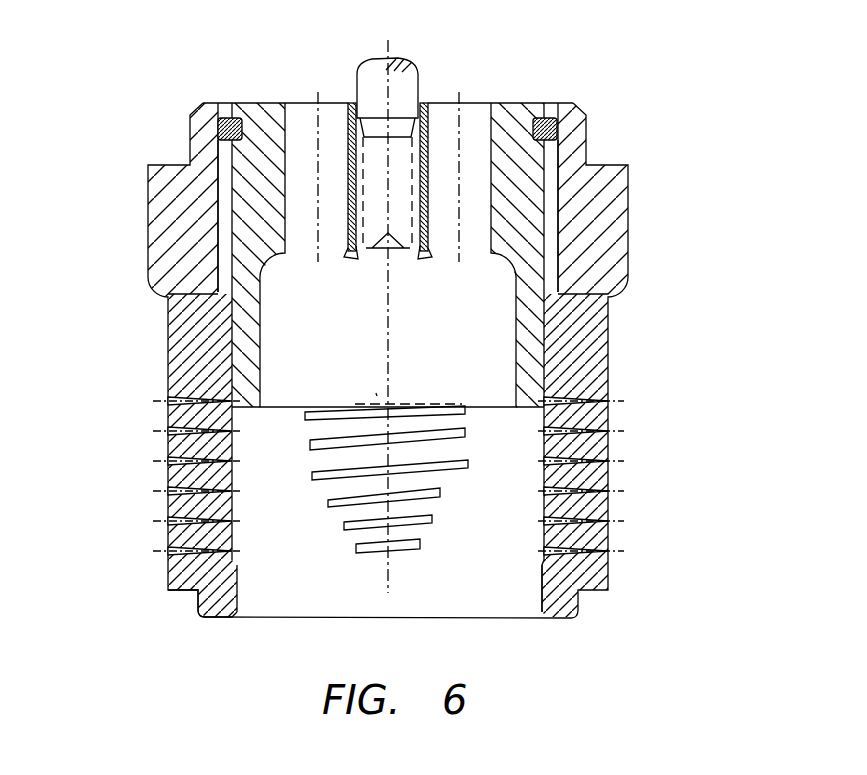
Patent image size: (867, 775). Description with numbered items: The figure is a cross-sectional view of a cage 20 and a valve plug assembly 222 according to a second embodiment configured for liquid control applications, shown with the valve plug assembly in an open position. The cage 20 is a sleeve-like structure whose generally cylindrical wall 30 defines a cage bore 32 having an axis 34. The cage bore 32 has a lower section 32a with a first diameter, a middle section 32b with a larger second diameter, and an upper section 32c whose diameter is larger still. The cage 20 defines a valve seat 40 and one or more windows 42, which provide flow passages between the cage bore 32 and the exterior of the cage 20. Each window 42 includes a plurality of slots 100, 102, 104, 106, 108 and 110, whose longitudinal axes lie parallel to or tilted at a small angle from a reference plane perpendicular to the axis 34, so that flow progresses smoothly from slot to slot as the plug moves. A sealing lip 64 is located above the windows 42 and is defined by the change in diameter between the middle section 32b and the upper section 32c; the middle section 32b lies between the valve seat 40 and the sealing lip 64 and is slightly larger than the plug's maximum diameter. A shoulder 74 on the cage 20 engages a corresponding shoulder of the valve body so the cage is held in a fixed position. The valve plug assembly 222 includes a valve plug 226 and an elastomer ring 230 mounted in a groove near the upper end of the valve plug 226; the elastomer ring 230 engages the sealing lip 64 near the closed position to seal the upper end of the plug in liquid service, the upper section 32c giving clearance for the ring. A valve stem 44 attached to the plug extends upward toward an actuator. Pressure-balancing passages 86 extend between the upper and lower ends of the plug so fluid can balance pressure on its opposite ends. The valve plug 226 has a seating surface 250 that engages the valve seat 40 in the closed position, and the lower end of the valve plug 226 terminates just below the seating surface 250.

The cage 20 is at (140, 184).
The cylindrical wall 30 is at (168, 310).
The cage bore 32 is at (470, 568).
The lower section 32a is at (543, 590).
The middle section 32b is at (233, 333).
The upper section 32c is at (592, 194).
The axis 34 is at (398, 340).
The valve seat 40 is at (542, 568).
The windows 42 is at (376, 393).
The valve stem 44 is at (357, 75).
The sealing lip 64 is at (598, 252).
The shoulder 74 is at (198, 595).
The pressure-balancing passages 86 is at (328, 255).
The slot 100 is at (168, 401).
The slot 102 is at (168, 431).
The slot 104 is at (168, 461).
The slot 106 is at (168, 491).
The slot 108 is at (168, 521).
The slot 110 is at (168, 551).
The valve plug assembly 222 is at (505, 103).
The valve plug 226 is at (272, 103).
The elastomer ring 230 is at (222, 128).
The seating surface 250 is at (540, 412).